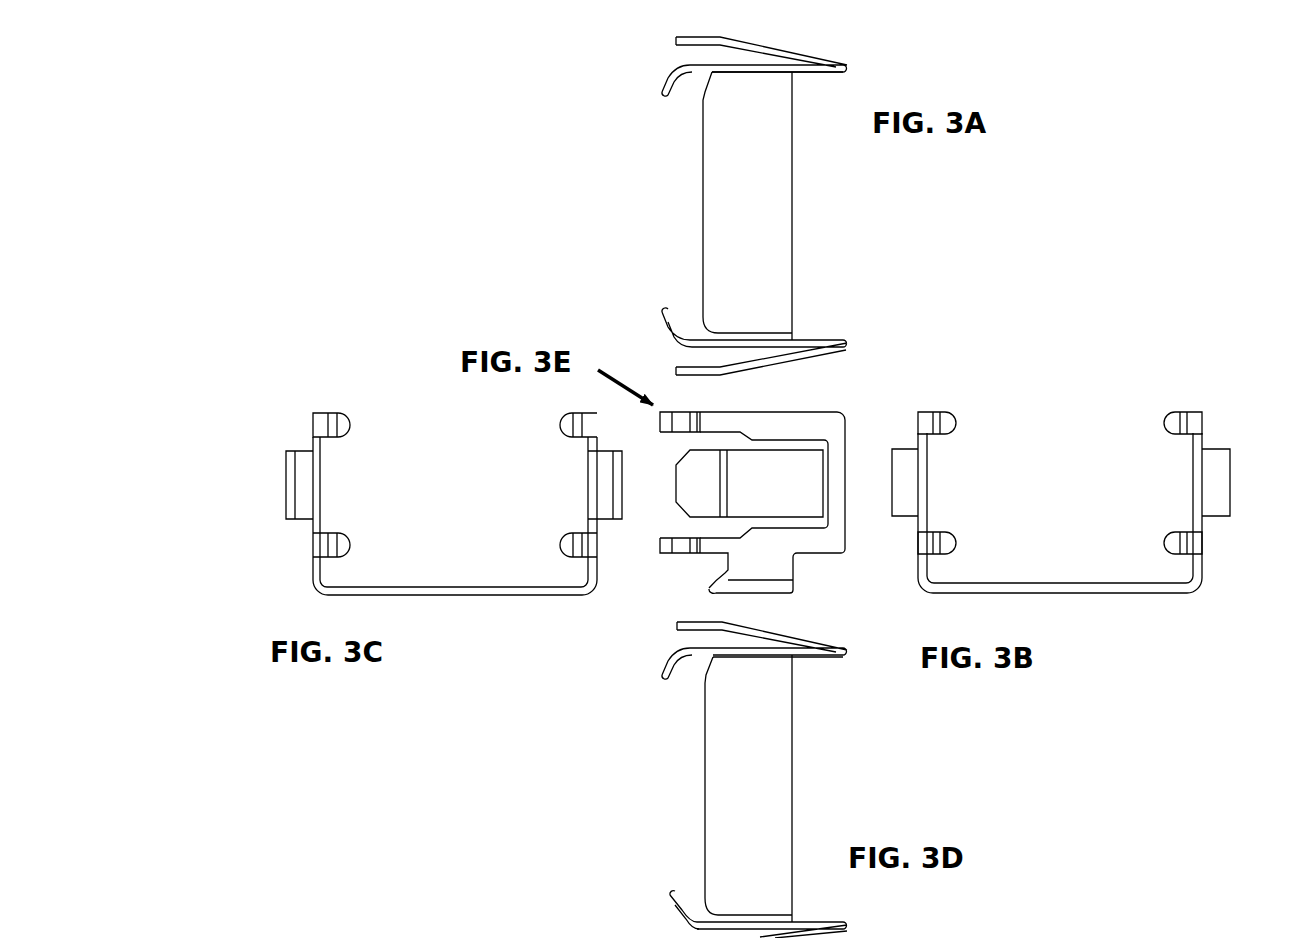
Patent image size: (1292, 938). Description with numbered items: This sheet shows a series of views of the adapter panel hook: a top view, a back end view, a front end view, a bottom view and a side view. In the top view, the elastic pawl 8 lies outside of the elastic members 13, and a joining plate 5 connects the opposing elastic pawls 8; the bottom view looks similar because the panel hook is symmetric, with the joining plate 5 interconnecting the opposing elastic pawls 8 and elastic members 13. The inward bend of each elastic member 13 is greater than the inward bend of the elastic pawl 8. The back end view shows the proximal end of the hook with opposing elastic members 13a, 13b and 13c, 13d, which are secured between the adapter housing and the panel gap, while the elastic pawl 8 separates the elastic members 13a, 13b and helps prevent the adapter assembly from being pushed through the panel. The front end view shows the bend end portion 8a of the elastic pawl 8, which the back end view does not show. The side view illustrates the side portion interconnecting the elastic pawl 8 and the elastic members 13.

In FIG. 3A, the joining plate 5 is at (735, 222).
In FIG. 3D, the joining plate 5 is at (745, 797).
In FIG. 3A, the elastic pawl 8 is at (718, 368).
In FIG. 3D, the elastic pawl 8 is at (680, 630).
In FIG. 3C, the elastic pawl 8 is at (275, 483).
In FIG. 3B, the elastic pawl 8 is at (1228, 488).
In FIG. 3E, the elastic pawl 8 is at (782, 508).
In FIG. 3C, the bend end portion 8a is at (612, 487).
In FIG. 3A, the elastic member 13 is at (650, 105).
In FIG. 3D, the elastic member 13 is at (668, 898).
In FIG. 3E, the elastic member 13 is at (688, 422).
In FIG. 3B, the elastic member 13a is at (935, 538).
In FIG. 3B, the elastic member 13b is at (1170, 553).
In FIG. 3C, the elastic member 13c is at (330, 425).
In FIG. 3B, the elastic member 13c is at (1182, 425).
In FIG. 3B, the elastic member 13d is at (940, 424).